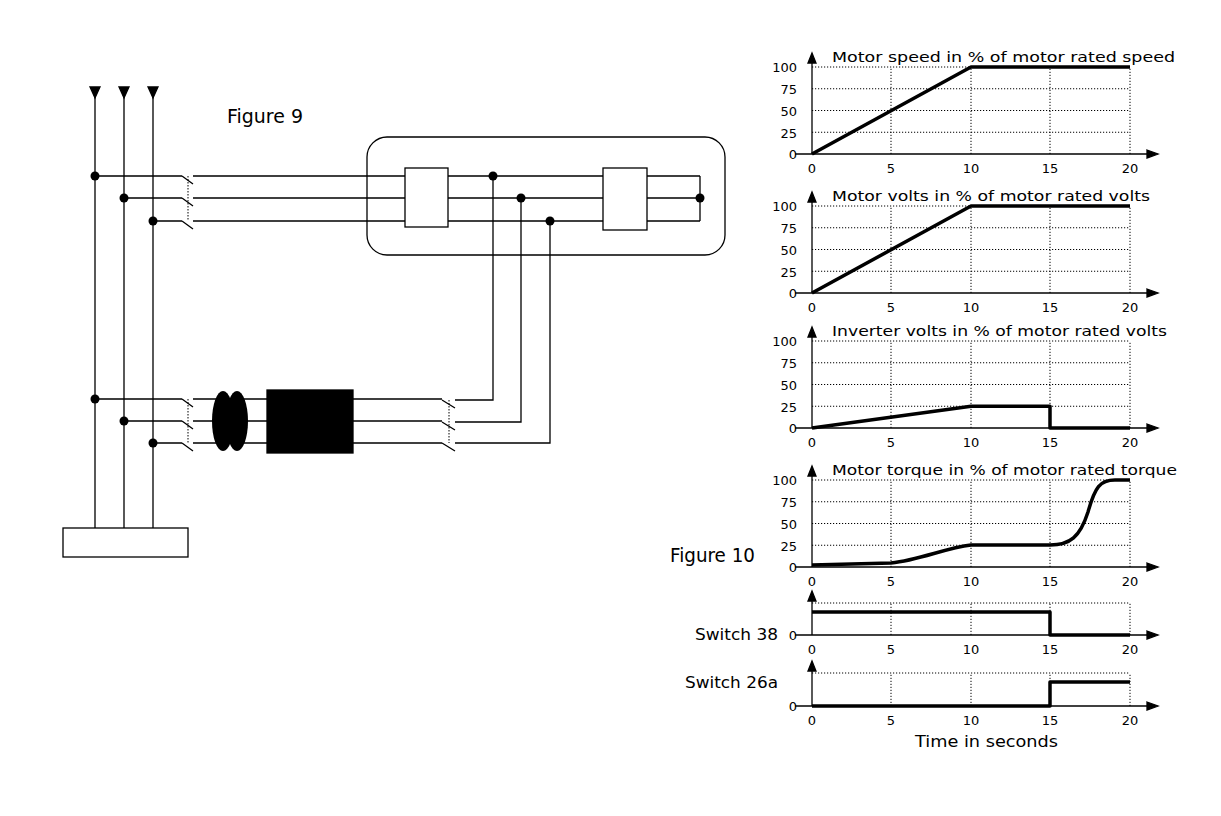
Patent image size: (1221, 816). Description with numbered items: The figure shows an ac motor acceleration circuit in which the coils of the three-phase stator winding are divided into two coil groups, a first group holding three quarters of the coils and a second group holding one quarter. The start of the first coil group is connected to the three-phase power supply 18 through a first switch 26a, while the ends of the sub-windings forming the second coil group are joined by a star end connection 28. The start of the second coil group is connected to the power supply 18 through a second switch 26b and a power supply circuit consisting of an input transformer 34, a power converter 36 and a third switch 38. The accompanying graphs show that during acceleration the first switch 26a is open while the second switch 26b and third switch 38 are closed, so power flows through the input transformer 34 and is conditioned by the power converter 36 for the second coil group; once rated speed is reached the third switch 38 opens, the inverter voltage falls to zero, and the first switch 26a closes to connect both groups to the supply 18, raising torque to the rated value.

The three-phase power supply 18 is at (125, 543).
The first switch 26a is at (192, 238).
The second switch 26b is at (187, 374).
The star end connection 28 is at (693, 232).
The input transformer 34 is at (228, 452).
The power converter 36 is at (310, 453).
The third switch 38 is at (450, 472).